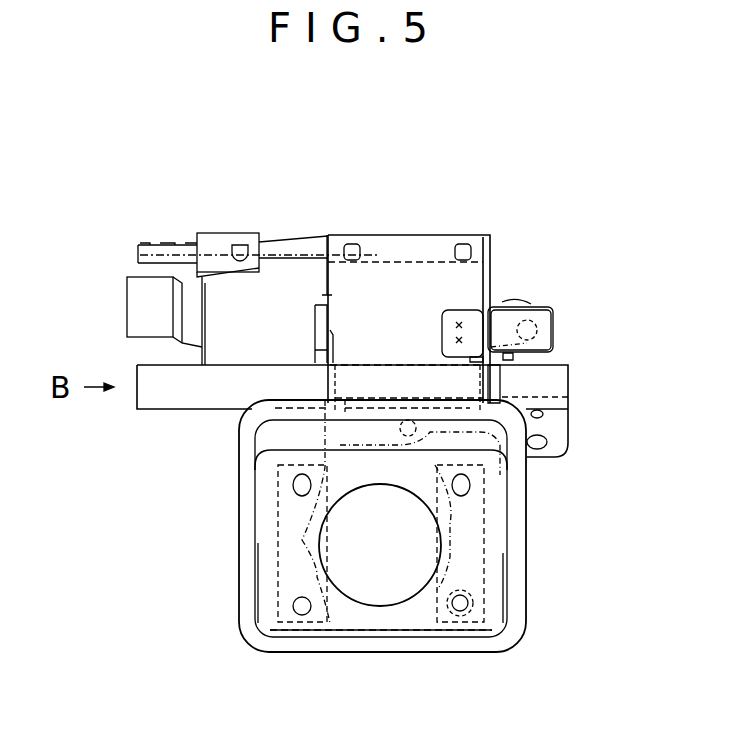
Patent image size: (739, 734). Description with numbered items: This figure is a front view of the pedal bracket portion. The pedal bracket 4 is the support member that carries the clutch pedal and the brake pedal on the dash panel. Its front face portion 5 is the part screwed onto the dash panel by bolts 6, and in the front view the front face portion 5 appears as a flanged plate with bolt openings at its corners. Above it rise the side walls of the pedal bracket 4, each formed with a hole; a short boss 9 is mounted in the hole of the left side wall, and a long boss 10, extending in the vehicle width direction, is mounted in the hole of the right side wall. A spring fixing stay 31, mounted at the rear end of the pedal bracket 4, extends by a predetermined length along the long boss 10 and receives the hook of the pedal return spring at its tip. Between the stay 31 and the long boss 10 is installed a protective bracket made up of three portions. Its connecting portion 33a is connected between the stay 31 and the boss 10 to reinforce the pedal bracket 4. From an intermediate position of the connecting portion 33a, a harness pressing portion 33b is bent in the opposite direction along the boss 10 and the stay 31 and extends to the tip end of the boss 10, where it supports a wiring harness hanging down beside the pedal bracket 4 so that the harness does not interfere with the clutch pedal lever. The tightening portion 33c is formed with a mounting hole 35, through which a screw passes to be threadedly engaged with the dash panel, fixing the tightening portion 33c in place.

The pedal bracket 4 is at (477, 278).
The front face portion 5 is at (366, 646).
The bolt 6 is at (460, 610).
The short boss 9 is at (500, 382).
The long boss 10 is at (181, 410).
The spring fixing stay 31 is at (310, 241).
The connecting portion 33a is at (204, 318).
The harness pressing portion 33b is at (127, 304).
The tightening portion 33c is at (208, 234).
The mounting hole 35 is at (243, 241).